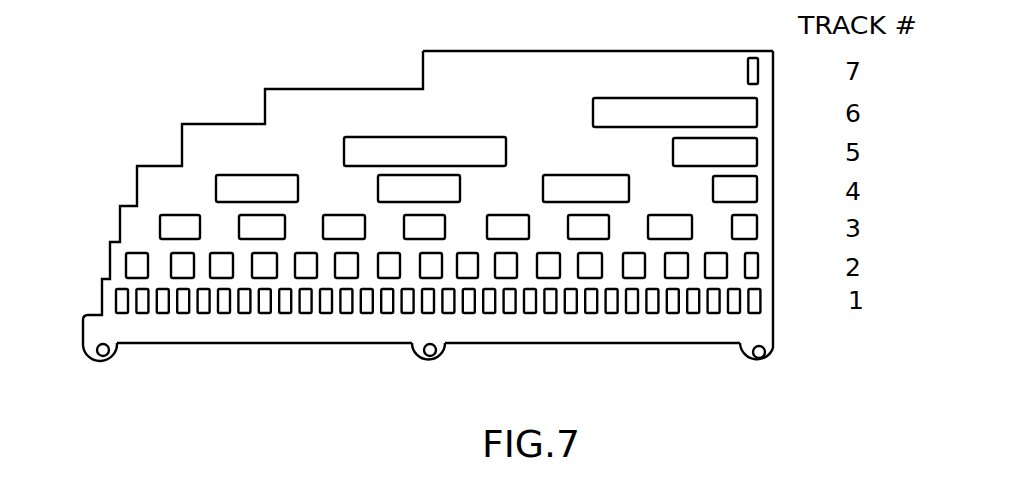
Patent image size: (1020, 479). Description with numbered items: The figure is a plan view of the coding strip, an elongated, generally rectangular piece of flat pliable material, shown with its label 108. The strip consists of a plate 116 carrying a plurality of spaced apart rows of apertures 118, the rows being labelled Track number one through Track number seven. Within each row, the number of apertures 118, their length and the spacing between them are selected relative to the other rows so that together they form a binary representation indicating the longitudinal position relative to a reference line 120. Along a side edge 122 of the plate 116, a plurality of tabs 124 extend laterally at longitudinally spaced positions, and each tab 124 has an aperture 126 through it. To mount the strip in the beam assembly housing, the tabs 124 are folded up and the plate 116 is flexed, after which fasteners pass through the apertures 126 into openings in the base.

The encoded card 108 is at (446, 208).
The top edge 116 is at (558, 68).
The apertures 118 is at (635, 308).
The stepped edge 120 is at (90, 240).
The bottom edge 122 is at (247, 344).
The locating holes 124 is at (103, 358).
The mounting lobes 126 is at (113, 351).